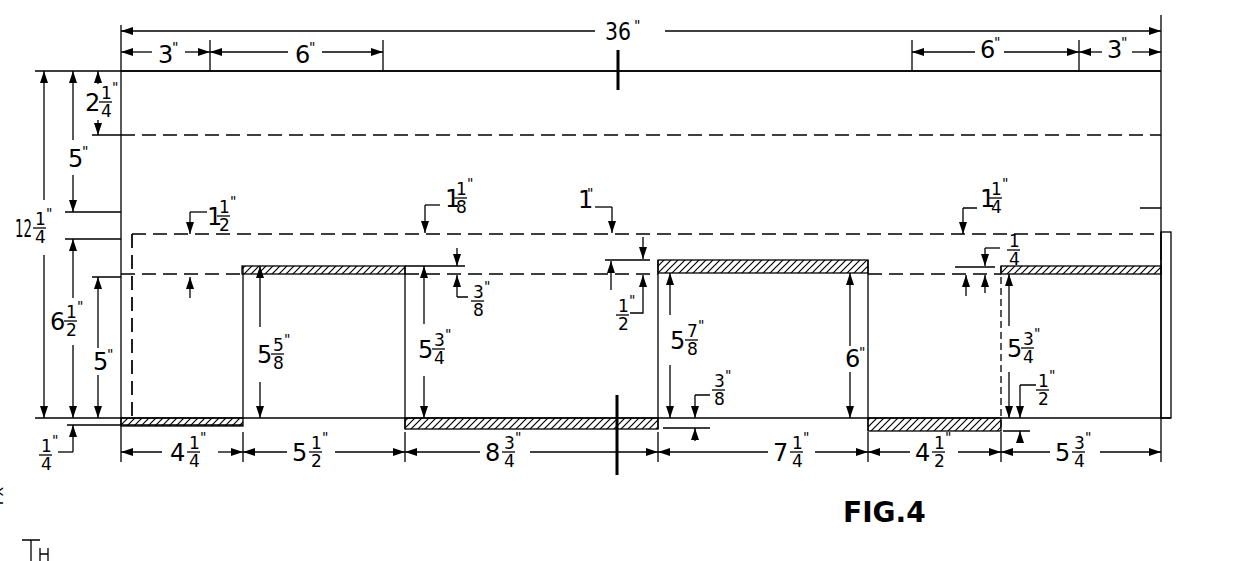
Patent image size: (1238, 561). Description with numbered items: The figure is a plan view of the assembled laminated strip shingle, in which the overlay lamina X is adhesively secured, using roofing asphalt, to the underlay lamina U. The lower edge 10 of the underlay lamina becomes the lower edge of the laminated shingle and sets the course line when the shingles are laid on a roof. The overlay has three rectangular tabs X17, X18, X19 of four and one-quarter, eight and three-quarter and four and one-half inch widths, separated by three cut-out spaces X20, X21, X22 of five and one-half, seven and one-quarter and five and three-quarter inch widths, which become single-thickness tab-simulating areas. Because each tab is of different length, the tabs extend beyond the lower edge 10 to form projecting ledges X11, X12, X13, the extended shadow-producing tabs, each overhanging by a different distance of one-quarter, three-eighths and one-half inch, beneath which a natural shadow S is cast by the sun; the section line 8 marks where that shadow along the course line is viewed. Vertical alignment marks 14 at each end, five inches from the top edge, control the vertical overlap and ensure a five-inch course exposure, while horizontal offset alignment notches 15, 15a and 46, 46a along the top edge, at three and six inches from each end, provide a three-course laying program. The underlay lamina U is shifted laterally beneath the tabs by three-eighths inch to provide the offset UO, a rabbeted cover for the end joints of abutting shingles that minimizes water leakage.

The lower edge of the underlay lamina 10 is at (365, 420).
The vertical alignment marks 14 is at (121, 212).
The horizontal offset alignment notch 15 is at (210, 71).
The horizontal offset alignment notch 15a is at (1079, 71).
The partition 46 is at (383, 71).
The partition 46a is at (912, 71).
The section line 8 is at (645, 475).
The overlay lamina X is at (710, 194).
The compartment X17 is at (197, 376).
The compartment X18 is at (540, 378).
The compartment X19 is at (945, 368).
The cut-out space X20 is at (360, 381).
The cut-out space X21 is at (782, 361).
The cut-out space X22 is at (1111, 370).
The extended shadow-producing tab X11 is at (213, 418).
The extended shadow-producing tab X12 is at (535, 418).
The extended shadow-producing tab X13 is at (960, 418).
The natural shadow S is at (162, 418).
The underlay lamina U is at (1130, 252).
The offset UO is at (1165, 370).